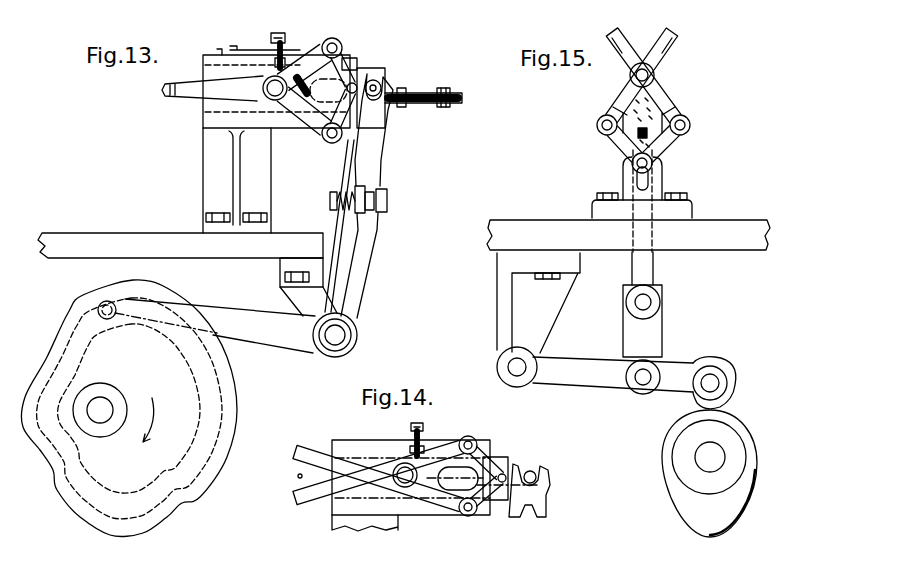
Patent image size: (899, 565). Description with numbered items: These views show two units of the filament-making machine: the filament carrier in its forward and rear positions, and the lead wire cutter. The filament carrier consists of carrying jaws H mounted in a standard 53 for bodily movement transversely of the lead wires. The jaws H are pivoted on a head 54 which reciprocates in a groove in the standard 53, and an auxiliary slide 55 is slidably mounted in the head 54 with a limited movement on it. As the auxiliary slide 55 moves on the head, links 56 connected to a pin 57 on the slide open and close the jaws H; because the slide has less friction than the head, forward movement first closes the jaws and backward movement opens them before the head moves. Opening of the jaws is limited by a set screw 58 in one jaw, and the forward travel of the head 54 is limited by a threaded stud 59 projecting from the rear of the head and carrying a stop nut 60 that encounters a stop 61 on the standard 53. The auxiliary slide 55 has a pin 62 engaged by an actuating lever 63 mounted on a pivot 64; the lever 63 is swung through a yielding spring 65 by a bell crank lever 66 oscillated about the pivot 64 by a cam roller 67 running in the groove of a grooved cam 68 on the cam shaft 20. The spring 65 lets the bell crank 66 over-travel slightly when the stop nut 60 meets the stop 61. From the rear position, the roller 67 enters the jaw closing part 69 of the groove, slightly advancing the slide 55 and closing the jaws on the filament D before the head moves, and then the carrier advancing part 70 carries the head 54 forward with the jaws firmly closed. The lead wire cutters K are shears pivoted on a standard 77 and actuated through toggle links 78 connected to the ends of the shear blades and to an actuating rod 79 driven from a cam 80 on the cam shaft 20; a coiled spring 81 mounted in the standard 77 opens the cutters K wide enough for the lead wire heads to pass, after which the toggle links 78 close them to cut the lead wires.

In FIG. 13, the cam shaft 20 is at (113, 408).
In FIG. 15, the cam shaft 20 is at (712, 456).
In FIG. 13, the standard 53 is at (214, 150).
In FIG. 14, the standard 53 is at (347, 526).
In FIG. 13, the head 54 is at (375, 69).
In FIG. 14, the head 54 is at (506, 460).
In FIG. 13, the auxiliary slide 55 is at (322, 126).
In FIG. 14, the auxiliary slide 55 is at (528, 467).
In FIG. 13, the links 56 is at (345, 100).
In FIG. 14, the links 56 is at (490, 463).
In FIG. 13, the pin 57 is at (371, 105).
In FIG. 14, the pin 57 is at (498, 497).
In FIG. 13, the set screw 58 is at (285, 34).
In FIG. 14, the set screw 58 is at (428, 430).
In FIG. 13, the threaded stud 59 is at (423, 105).
In FIG. 13, the stop nut 60 is at (443, 93).
In FIG. 13, the stop 61 is at (404, 92).
In FIG. 13, the pin 62 is at (379, 84).
In FIG. 14, the pin 62 is at (540, 483).
In FIG. 13, the actuating lever 63 is at (369, 168).
In FIG. 14, the actuating lever 63 is at (528, 505).
In FIG. 13, the pivot 64 is at (336, 335).
In FIG. 13, the spring 65 is at (337, 189).
In FIG. 13, the bell crank lever 66 is at (250, 329).
In FIG. 13, the cam roller 67 is at (98, 305).
In FIG. 13, the grooved cam 68 is at (192, 426).
In FIG. 13, the jaw closing part 69 is at (75, 310).
In FIG. 13, the carrier advancing part 70 is at (53, 350).
In FIG. 15, the standard 77 is at (623, 172).
In FIG. 15, the toggle links 78 is at (668, 159).
In FIG. 15, the actuating rod 79 is at (643, 270).
In FIG. 15, the cam 80 is at (669, 440).
In FIG. 15, the coiled spring 81 is at (662, 110).
In FIG. 13, the filament carrier jaws H is at (197, 82).
In FIG. 14, the filament carrier jaws H is at (319, 470).
In FIG. 14, the filament D is at (297, 477).
In FIG. 15, the lead wire cutters K is at (668, 50).